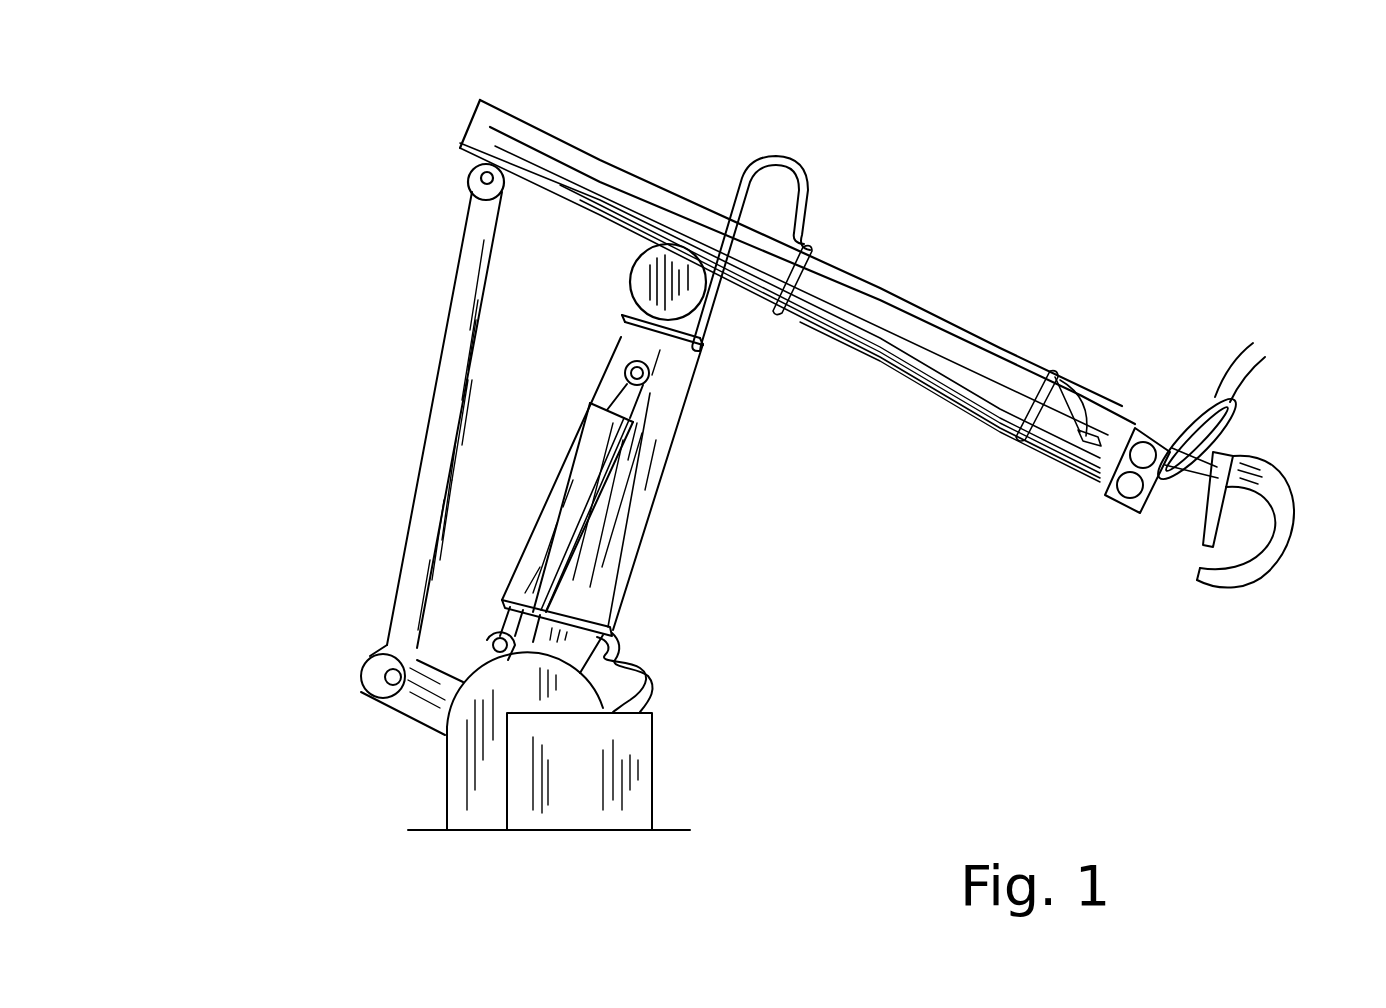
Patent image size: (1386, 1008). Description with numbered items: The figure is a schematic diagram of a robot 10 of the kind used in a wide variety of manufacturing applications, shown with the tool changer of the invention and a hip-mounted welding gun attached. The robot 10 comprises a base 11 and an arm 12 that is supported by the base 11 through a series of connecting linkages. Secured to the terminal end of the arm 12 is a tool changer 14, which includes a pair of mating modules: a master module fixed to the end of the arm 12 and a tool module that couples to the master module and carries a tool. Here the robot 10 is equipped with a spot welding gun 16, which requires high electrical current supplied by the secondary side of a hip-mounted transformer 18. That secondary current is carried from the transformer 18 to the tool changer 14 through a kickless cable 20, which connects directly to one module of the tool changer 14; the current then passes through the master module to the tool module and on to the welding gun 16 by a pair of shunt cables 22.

The robot 10 is at (240, 325).
The base 11 is at (459, 762).
The arm 12 is at (579, 148).
The tool changer 14 is at (1138, 426).
The spot welding gun 16 is at (1283, 481).
The hip-mounted transformer 18 is at (652, 742).
The kickless cable 20 is at (808, 210).
The shunt cables 22 is at (1222, 404).